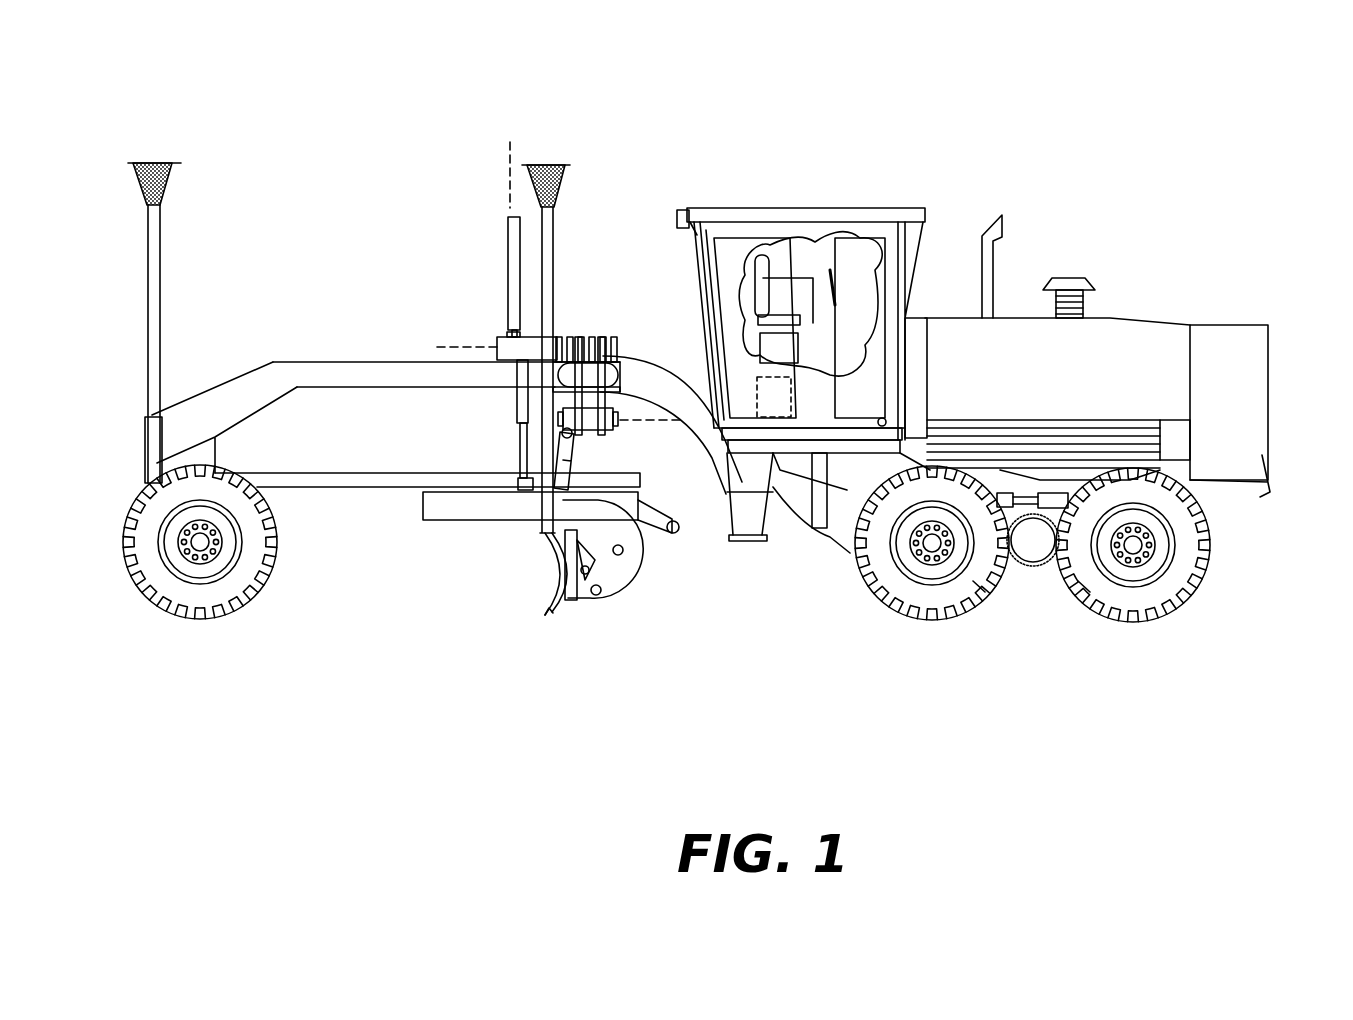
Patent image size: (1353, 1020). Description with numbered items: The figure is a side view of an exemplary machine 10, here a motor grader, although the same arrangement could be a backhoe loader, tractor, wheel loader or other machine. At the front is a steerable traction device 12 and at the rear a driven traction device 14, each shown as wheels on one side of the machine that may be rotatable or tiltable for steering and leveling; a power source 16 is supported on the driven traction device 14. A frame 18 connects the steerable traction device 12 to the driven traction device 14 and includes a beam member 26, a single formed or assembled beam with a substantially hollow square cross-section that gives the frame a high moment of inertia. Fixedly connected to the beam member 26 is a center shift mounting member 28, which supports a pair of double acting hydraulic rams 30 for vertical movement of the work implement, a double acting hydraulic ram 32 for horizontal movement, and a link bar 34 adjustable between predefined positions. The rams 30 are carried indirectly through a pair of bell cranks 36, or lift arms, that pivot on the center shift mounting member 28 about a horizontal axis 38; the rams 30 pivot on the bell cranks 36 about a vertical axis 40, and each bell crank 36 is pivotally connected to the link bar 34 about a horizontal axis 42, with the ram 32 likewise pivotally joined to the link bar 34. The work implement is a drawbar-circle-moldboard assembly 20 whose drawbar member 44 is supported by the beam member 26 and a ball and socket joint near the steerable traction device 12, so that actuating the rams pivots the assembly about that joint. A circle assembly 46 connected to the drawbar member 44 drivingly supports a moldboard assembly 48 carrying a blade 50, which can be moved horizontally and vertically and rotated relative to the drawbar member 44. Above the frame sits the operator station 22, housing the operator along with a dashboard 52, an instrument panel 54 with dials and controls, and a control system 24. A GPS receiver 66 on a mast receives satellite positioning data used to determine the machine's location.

The machine 10 is at (727, 55).
The steerable traction device 12 is at (238, 598).
The driven traction device 14 is at (1085, 588).
The power source 16 is at (1072, 385).
The frame 18 is at (283, 360).
The drawbar-circle-moldboard assembly (DCM) 20 is at (518, 549).
The operator station 22 is at (816, 185).
The control system 24 is at (788, 406).
The beam member 26 is at (352, 368).
The center shift mounting member 28 is at (615, 395).
The double acting hydraulic ram 30 is at (509, 264).
The double acting hydraulic ram 32 is at (572, 465).
The link bar 34 is at (590, 433).
The bell crank 36 is at (499, 345).
The horizontal axis 38 is at (453, 345).
The vertical axis 40 is at (507, 172).
The horizontal axis 42 is at (672, 395).
The drawbar member 44 is at (390, 475).
The circle assembly 46 is at (404, 520).
The moldboard assembly 48 is at (598, 610).
The blade 50 is at (547, 598).
The dashboard 52 is at (810, 304).
The instrument panel 54 is at (784, 309).
The GPS receiver 66 is at (147, 163).